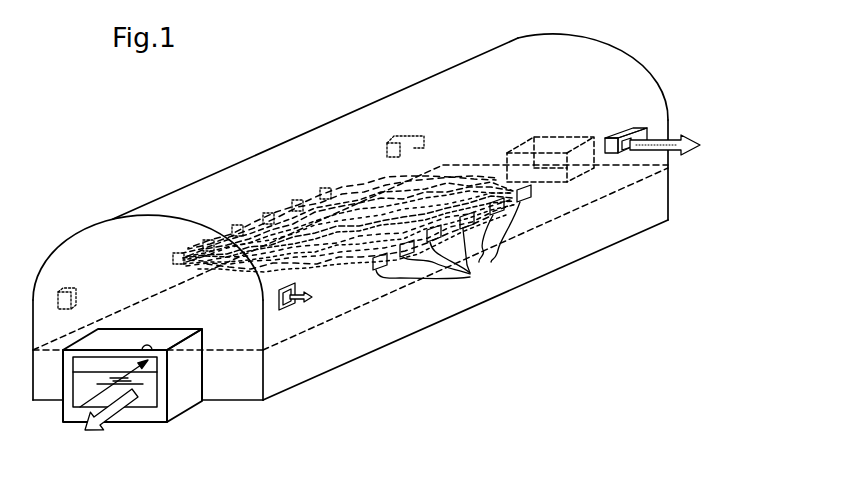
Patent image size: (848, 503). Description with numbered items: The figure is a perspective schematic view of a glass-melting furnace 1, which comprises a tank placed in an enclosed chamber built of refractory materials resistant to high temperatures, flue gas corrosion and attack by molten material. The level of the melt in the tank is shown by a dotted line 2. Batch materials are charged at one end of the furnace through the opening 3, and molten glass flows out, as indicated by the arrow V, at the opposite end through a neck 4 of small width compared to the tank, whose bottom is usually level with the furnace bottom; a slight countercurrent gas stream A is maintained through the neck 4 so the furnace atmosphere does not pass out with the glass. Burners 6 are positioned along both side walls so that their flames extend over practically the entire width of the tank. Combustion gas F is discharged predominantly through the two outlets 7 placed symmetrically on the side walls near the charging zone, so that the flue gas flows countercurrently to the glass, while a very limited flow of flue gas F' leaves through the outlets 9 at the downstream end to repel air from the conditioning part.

The furnace 1 is at (210, 161).
The dotted line 2 is at (350, 315).
The opening 3 is at (580, 126).
The neck 4 is at (177, 378).
The burners 6 is at (452, 236).
The outlets 7 is at (610, 153).
The outlets 9 is at (279, 298).